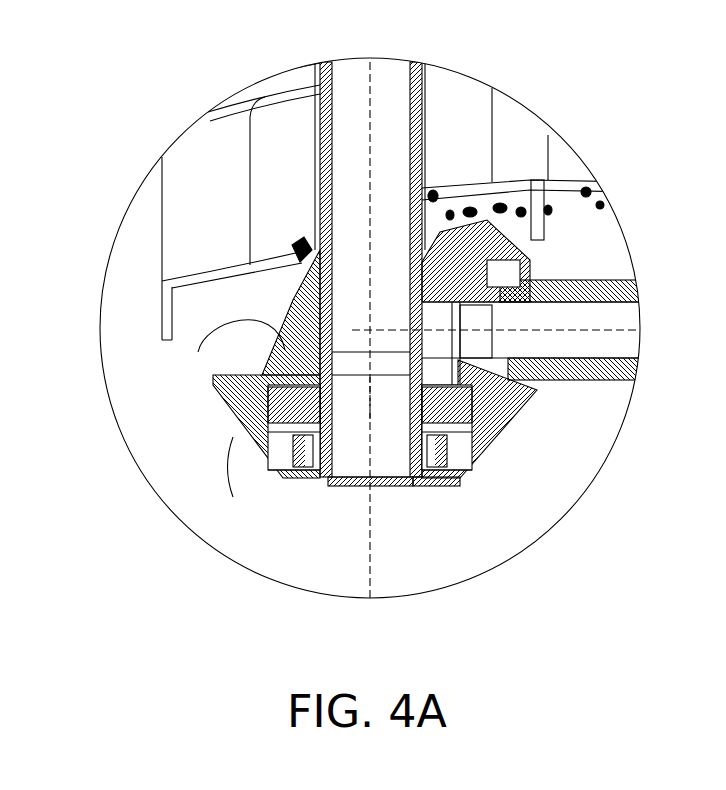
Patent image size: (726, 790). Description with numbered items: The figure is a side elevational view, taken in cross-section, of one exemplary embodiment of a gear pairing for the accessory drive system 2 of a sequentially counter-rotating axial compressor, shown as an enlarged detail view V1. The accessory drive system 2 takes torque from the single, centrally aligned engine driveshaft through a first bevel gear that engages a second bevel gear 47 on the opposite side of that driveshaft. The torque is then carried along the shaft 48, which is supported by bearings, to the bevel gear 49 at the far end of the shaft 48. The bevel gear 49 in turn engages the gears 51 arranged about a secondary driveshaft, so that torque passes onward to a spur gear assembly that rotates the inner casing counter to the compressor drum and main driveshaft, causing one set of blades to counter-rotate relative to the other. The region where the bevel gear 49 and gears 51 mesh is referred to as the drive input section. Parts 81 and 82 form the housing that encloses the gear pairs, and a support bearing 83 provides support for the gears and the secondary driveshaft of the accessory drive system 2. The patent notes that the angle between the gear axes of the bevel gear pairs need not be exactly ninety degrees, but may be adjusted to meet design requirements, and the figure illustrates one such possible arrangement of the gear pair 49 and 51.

The accessory drive system 2 is at (230, 430).
The second bevel gear 47 is at (363, 275).
The shaft 48 is at (363, 324).
The bevel gear 49 is at (461, 486).
The gears 51 is at (540, 248).
The housing part 81 is at (218, 333).
The housing part 82 is at (522, 383).
The support bearing 83 is at (520, 455).
The view V1 is at (518, 557).